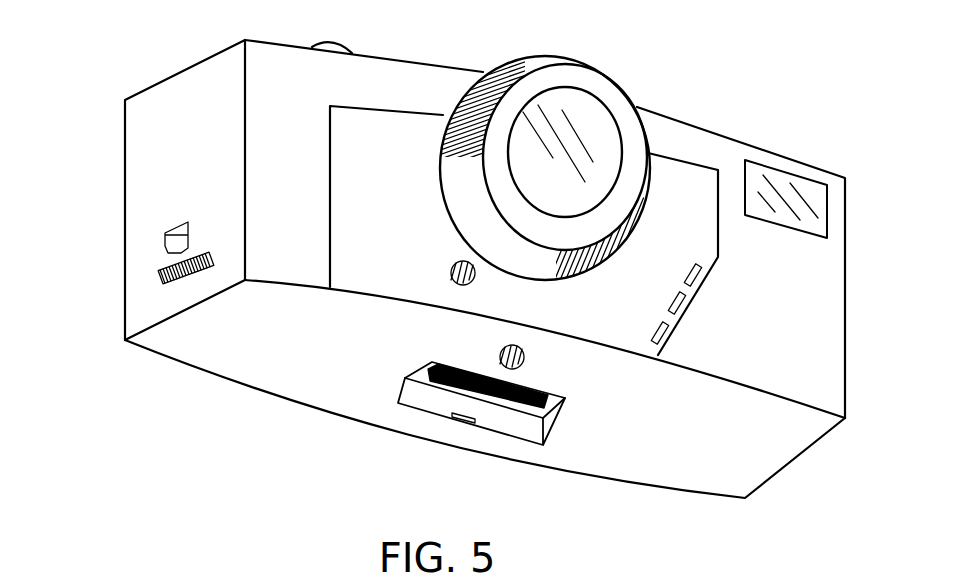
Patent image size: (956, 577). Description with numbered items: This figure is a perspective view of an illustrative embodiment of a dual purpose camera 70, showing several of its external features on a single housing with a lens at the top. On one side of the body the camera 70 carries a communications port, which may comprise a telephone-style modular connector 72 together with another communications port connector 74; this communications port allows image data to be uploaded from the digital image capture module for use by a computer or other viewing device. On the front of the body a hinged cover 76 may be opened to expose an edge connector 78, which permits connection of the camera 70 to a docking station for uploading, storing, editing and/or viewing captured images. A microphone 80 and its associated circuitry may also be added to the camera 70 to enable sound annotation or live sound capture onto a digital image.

The dual purpose camera 70 is at (782, 70).
The RJ-11 connector 72 is at (164, 238).
The communications port connector 74 is at (158, 278).
The hinged cover 76 is at (398, 386).
The edge connector 78 is at (432, 368).
The microphone 80 is at (453, 265).